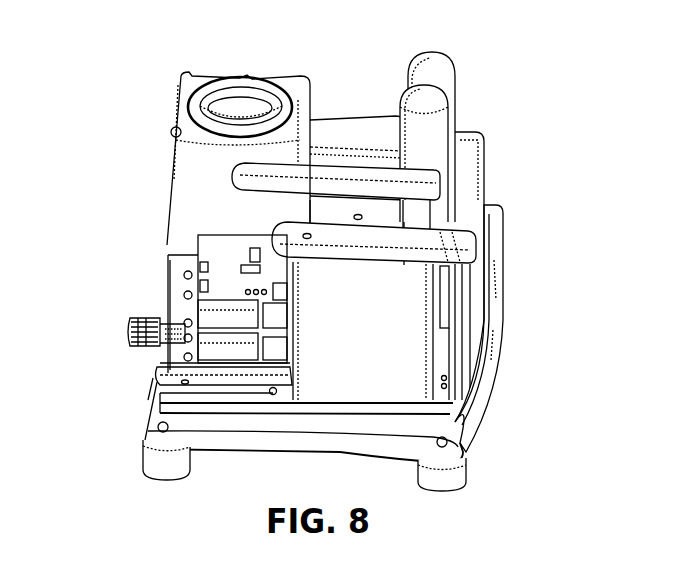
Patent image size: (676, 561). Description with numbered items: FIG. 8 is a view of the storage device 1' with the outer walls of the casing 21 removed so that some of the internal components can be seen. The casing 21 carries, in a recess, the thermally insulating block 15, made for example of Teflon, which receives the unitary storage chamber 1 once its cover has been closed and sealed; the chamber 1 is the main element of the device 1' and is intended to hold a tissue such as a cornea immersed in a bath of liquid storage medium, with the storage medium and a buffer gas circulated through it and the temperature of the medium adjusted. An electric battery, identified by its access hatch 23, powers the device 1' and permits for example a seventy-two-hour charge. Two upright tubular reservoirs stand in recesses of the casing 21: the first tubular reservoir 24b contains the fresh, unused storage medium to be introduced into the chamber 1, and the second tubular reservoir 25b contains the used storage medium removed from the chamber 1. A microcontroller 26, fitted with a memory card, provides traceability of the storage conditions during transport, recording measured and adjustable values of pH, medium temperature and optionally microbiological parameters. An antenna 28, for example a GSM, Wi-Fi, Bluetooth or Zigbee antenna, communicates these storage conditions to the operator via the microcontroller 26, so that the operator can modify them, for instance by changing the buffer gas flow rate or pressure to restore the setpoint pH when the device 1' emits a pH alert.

The unitary storage chamber 1 is at (240, 73).
The storage device 1' is at (114, 317).
The thermally insulating block 15 is at (197, 80).
The casing 21 is at (263, 453).
The access hatch 23 is at (462, 249).
The first tubular reservoir 24b is at (442, 64).
The second tubular reservoir 25b is at (436, 100).
The microcontroller 26 is at (200, 248).
The antenna 28 is at (424, 186).